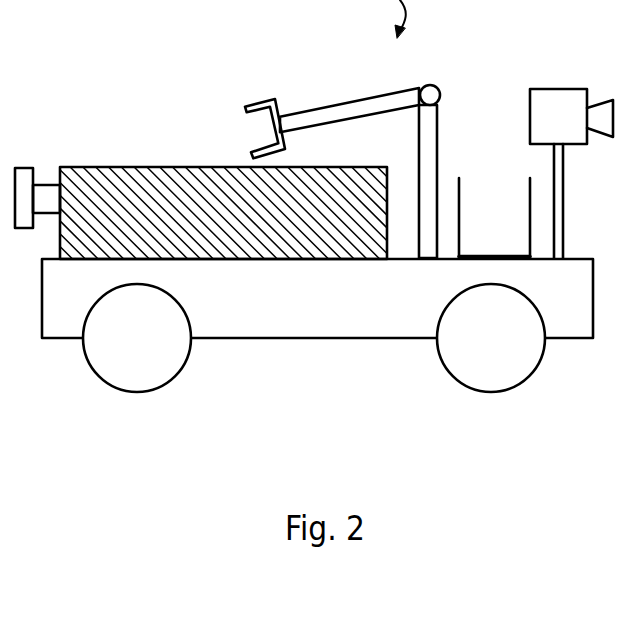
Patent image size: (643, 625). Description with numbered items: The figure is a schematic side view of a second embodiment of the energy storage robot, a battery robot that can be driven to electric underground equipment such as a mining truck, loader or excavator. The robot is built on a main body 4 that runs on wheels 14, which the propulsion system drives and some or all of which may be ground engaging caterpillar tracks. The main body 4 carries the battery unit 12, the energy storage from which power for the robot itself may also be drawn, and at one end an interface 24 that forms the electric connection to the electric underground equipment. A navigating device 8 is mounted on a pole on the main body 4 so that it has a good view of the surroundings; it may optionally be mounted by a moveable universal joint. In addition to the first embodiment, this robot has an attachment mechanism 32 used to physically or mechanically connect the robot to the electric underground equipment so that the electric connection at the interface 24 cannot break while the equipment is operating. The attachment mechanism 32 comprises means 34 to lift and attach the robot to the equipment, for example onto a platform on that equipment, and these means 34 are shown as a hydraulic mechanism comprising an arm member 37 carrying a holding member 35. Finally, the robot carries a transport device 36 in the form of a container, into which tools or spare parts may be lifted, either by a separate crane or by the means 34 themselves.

The main body 4 is at (362, 339).
The navigating device 8 is at (555, 89).
The battery unit 12 is at (98, 182).
The wheels 14 is at (180, 368).
The interface 24 is at (25, 177).
The attachment mechanism 32 is at (432, 78).
The means for lifting and attaching 34 is at (358, 139).
The holding member 35 is at (253, 100).
The transport device 36 is at (530, 215).
The arm member 37 is at (327, 118).